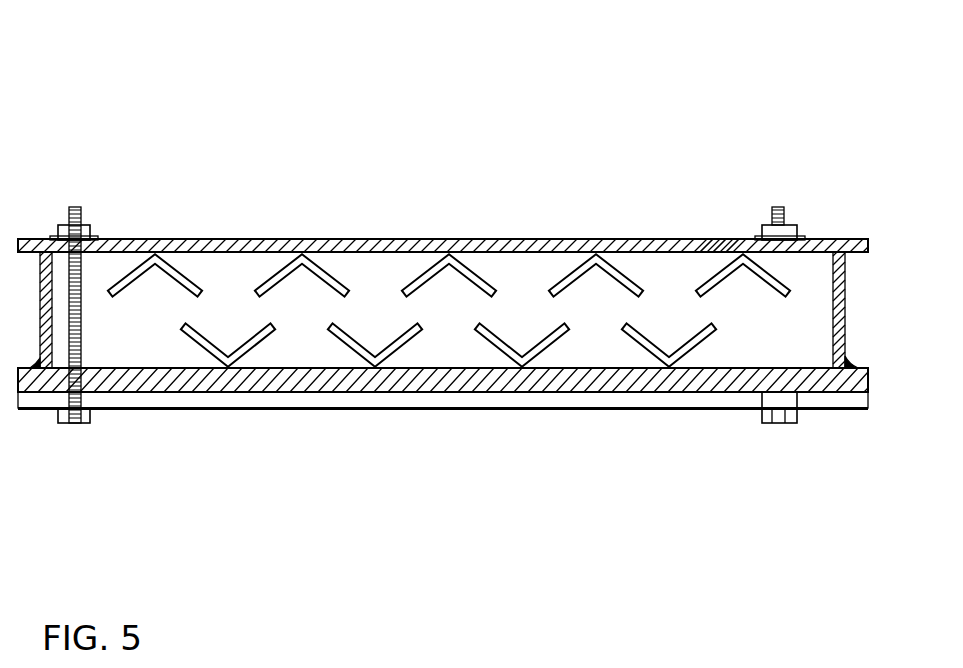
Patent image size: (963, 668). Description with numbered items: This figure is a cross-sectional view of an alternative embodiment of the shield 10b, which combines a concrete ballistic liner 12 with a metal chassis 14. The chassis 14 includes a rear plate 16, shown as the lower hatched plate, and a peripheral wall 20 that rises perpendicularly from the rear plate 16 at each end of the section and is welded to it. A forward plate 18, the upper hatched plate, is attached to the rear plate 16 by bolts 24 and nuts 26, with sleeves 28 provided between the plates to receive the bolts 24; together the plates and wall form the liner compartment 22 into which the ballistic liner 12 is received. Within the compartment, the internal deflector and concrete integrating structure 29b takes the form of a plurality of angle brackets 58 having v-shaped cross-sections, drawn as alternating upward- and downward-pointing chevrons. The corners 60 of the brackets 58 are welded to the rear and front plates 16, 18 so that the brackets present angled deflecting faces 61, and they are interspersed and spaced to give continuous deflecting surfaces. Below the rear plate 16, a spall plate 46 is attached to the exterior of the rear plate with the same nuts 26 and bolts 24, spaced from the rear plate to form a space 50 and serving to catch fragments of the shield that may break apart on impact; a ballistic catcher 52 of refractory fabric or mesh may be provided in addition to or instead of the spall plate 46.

The shield 10b is at (247, 112).
The concrete ballistic liner 12 is at (471, 302).
The chassis 14 is at (443, 439).
The rear plate 16 is at (215, 378).
The forward plate 18 is at (268, 240).
The peripheral wall 20 is at (848, 335).
The compartment 22 is at (597, 343).
The bolt 24 is at (93, 240).
The nut 26 is at (89, 218).
The sleeve 28 is at (117, 240).
The internal deflector/concrete integrating structure 29b is at (567, 268).
The spall plate 46 is at (450, 408).
The space 50 is at (495, 398).
The ballistic catcher 52 is at (573, 410).
The angle bracket 58 is at (625, 262).
The corner 60 is at (724, 247).
The angled deflecting face 61 is at (770, 268).